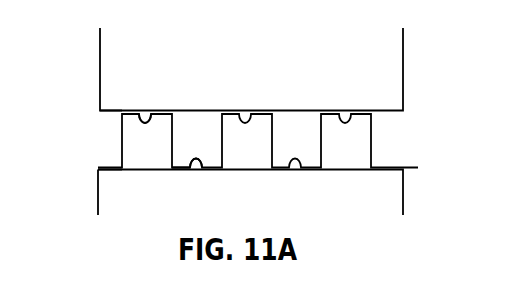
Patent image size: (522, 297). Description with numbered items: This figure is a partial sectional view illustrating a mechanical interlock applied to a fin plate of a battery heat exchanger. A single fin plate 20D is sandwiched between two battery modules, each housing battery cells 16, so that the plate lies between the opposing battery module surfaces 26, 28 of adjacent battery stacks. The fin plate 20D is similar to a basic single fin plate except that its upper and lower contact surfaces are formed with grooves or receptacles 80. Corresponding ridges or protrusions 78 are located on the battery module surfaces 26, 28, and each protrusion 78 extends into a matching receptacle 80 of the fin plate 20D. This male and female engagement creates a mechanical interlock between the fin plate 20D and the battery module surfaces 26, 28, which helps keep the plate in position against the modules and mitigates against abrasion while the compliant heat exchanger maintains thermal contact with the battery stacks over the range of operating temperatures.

The battery cell 16 is at (259, 60).
The single fin plate 20D is at (372, 124).
The battery module surface 26 is at (113, 111).
The battery module surface 28 is at (108, 169).
The ridge or protrusion 78 is at (143, 113).
The groove or receptacle 80 is at (196, 156).